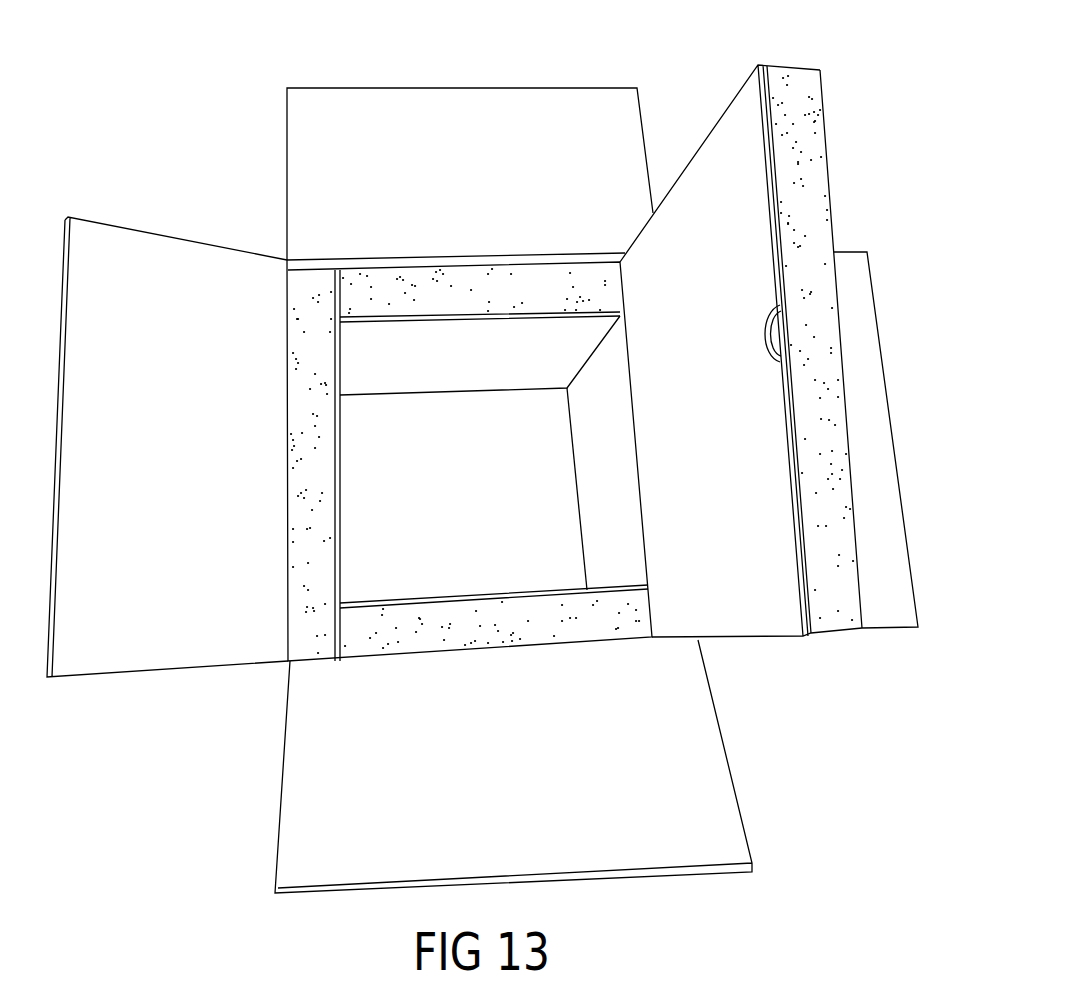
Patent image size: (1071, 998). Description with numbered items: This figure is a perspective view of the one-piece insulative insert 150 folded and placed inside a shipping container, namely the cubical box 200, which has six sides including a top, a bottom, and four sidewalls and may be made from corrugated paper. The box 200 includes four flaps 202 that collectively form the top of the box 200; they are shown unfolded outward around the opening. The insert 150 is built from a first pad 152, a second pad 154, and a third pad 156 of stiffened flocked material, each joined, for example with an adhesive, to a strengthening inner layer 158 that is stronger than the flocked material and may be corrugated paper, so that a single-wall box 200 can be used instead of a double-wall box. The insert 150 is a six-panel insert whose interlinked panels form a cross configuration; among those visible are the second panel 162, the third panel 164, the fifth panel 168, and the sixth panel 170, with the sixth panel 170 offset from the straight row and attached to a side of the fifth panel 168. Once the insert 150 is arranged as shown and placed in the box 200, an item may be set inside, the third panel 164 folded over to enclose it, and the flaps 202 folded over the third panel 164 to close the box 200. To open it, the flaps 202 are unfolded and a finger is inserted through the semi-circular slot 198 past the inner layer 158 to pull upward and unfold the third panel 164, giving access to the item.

The insulative insert 150 is at (583, 365).
The first pad 152 is at (315, 637).
The second pad 154 is at (788, 82).
The third pad 156 is at (372, 278).
The inner layer 158 is at (774, 327).
The second panel 162 is at (628, 486).
The third panel 164 is at (736, 408).
The fifth panel 168 is at (478, 510).
The sixth panel 170 is at (482, 368).
The semi-circular slot 198 is at (768, 320).
The box 200 is at (482, 473).
The flaps 202 is at (167, 647).